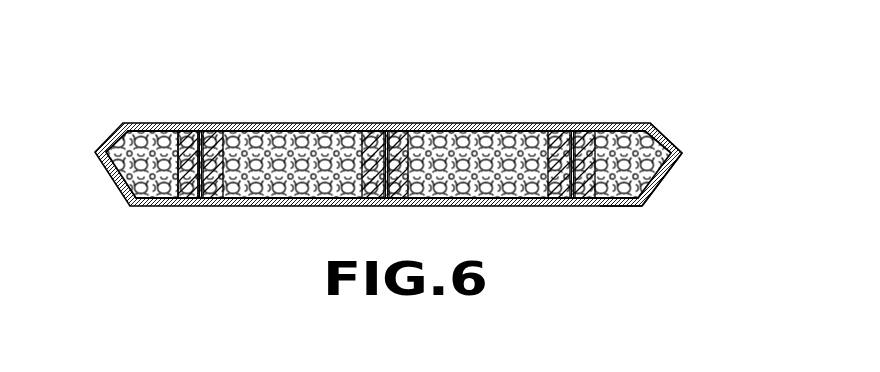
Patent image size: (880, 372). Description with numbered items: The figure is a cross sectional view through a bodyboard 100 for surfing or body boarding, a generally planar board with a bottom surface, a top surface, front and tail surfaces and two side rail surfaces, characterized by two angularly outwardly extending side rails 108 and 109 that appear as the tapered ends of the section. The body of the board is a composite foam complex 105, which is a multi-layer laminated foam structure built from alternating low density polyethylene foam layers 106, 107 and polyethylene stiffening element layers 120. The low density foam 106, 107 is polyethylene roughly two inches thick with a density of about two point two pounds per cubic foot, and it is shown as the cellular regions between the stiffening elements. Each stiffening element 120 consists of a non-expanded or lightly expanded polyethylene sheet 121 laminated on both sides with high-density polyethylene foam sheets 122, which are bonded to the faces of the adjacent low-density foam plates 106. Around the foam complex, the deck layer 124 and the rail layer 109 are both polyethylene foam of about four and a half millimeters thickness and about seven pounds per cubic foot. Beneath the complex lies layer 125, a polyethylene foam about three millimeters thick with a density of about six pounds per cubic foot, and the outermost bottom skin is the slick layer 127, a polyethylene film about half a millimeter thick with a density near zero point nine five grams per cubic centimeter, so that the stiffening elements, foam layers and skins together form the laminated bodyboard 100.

The bodyboard 100 is at (397, 155).
The composite foam complex 105 is at (207, 133).
The low density polyethylene foam layer 106 is at (257, 201).
The low density polyethylene foam layer 107 is at (145, 203).
The side rail 108 is at (674, 140).
The side rail / rail layer 109 is at (668, 182).
The polyethylene stiffening element layer 120 is at (405, 114).
The polyethylene sheet 121 is at (370, 127).
The high-density polyethylene foam sheet 122 is at (428, 134).
The deck layer 124 is at (568, 127).
The polyethylene foam layer 125 is at (612, 206).
The slick layer 127 is at (625, 206).